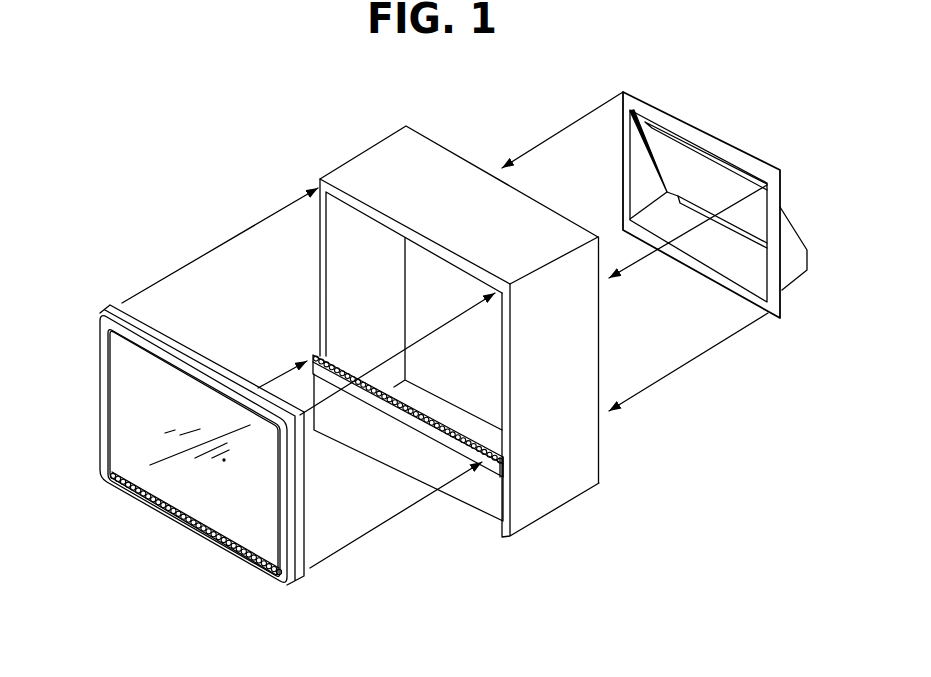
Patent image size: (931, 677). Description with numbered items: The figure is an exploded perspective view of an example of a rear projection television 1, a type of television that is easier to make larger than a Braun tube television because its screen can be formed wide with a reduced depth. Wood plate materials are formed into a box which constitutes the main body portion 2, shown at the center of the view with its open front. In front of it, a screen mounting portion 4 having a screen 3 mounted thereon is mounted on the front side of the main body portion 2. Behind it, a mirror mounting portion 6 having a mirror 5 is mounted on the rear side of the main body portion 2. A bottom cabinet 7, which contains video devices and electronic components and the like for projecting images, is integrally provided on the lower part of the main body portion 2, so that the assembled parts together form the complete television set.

The rear projection television 1 is at (250, 181).
The main body portion 2 is at (461, 177).
The screen 3 is at (160, 481).
The screen mounting portion 4 is at (112, 307).
The mirror 5 is at (718, 178).
The mirror mounting portion 6 is at (778, 272).
The bottom cabinet 7 is at (472, 485).